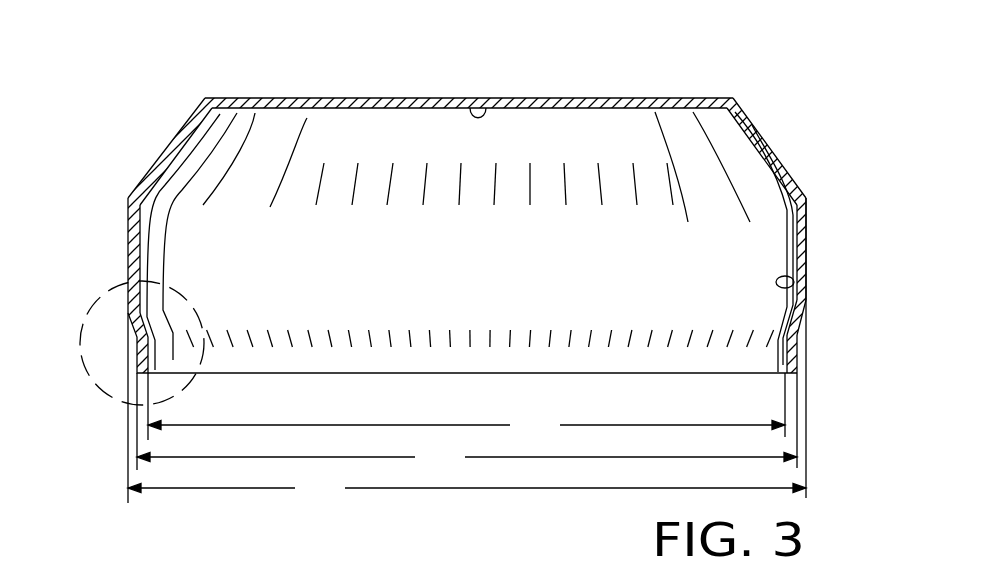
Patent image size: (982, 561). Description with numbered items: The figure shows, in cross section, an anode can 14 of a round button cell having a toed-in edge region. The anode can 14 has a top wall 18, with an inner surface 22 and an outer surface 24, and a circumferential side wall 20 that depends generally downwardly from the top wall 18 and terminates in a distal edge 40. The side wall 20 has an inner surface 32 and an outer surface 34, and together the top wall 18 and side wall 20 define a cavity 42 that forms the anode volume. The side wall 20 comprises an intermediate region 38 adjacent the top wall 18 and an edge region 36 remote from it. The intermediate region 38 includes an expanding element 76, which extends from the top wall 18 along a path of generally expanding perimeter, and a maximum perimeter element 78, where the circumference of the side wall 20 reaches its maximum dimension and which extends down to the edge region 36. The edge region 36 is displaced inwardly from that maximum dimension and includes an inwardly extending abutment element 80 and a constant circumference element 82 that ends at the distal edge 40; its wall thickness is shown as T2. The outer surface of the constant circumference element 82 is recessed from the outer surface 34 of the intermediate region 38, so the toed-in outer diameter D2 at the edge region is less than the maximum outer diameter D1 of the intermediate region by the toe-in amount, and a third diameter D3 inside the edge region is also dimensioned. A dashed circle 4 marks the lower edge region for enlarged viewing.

The anode can 14 is at (708, 62).
The top wall 18 is at (415, 100).
The inner surface 22 is at (490, 106).
The outer surface 24 is at (548, 98).
The expanding element 76 is at (760, 148).
The intermediate region 38 is at (803, 190).
The outer surface 34 is at (800, 215).
The side wall 20 is at (810, 246).
The maximum perimeter element 78 is at (808, 275).
The inner surface 32 is at (793, 284).
The inwardly extending abutment element 80 is at (800, 328).
The edge region 36 is at (797, 351).
The constant circumference element 82 is at (800, 370).
The distal edge 40 is at (803, 387).
The cavity 42 is at (712, 358).
The detail circle of FIG. 4 is at (200, 322).
The thickness T2 is at (148, 267).
The maximum outer diameter D1 is at (467, 352).
The toed-in outer diameter D2 is at (467, 424).
The inner diameter D3 is at (466, 408).